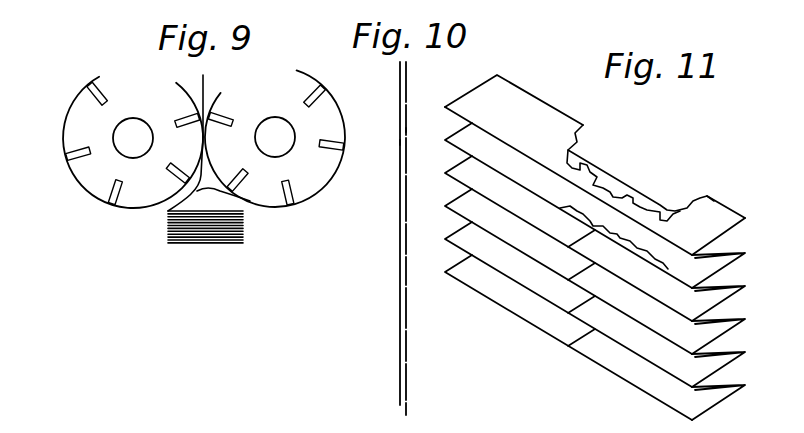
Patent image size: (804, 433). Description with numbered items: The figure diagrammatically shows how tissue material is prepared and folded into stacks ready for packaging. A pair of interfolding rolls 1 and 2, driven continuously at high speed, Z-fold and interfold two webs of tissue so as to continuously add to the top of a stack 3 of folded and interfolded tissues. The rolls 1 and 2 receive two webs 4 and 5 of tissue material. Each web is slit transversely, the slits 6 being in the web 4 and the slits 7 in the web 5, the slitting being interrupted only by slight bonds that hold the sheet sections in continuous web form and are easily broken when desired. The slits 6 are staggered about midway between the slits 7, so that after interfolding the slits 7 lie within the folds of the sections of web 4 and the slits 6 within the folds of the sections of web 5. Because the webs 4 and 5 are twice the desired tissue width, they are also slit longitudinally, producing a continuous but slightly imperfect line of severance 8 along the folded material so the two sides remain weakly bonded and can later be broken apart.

In FIG. 9, the interfolding roll 1 is at (70, 115).
In FIG. 9, the interfolding roll 2 is at (322, 117).
In FIG. 9, the stack 3 is at (222, 237).
In FIG. 10, the web 4 is at (399, 102).
In FIG. 10, the web 5 is at (407, 63).
In FIG. 10, the slits 6 is at (399, 142).
In FIG. 11, the slits 6 is at (647, 198).
In FIG. 10, the slits 7 is at (407, 130).
In FIG. 11, the slits 7 is at (650, 262).
In FIG. 11, the line of severance 8 is at (577, 240).